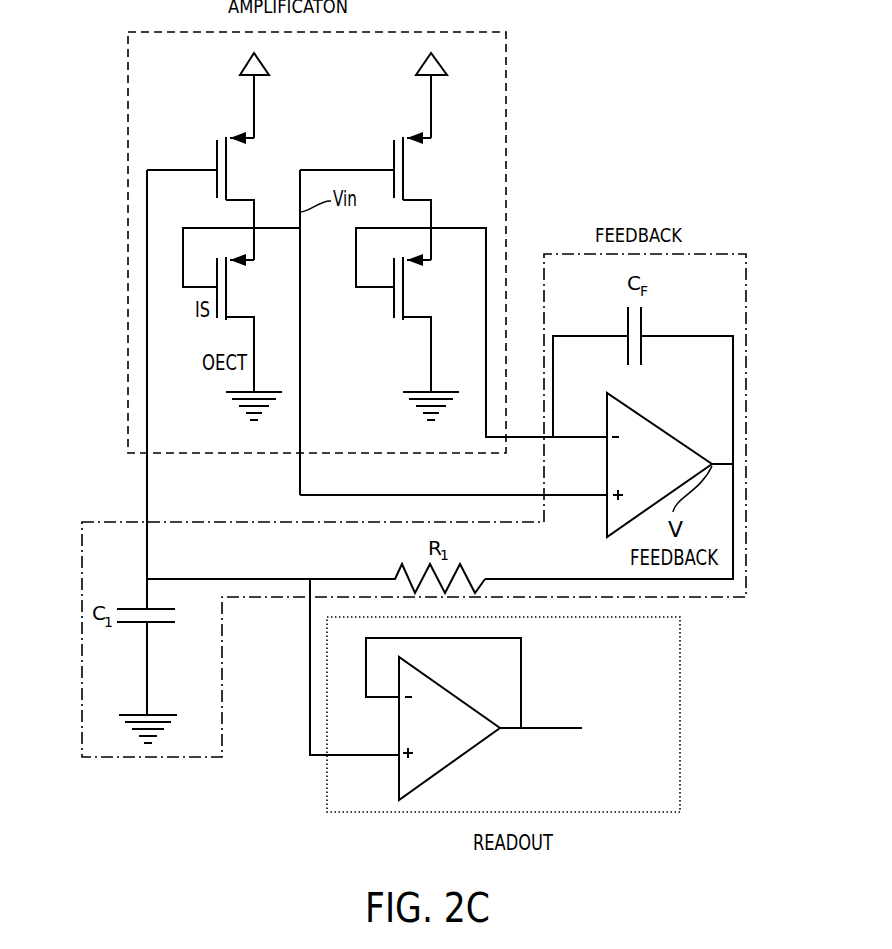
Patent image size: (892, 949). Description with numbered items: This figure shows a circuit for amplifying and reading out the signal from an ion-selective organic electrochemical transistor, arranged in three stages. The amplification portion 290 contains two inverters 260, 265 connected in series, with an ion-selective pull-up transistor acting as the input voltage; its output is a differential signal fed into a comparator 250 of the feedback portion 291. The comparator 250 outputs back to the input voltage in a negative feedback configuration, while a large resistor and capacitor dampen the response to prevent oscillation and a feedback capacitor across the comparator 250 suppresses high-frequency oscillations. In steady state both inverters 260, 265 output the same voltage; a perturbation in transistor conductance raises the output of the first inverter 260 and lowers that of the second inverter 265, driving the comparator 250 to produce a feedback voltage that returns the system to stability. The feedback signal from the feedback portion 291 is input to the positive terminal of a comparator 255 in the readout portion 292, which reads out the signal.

The amplification portion 290 is at (127, 68).
The first inverter 260 is at (196, 152).
The second inverter 265 is at (431, 186).
The feedback portion 291 is at (748, 263).
The comparator 250 is at (648, 421).
The readout portion 292 is at (680, 678).
The comparator 255 is at (478, 744).